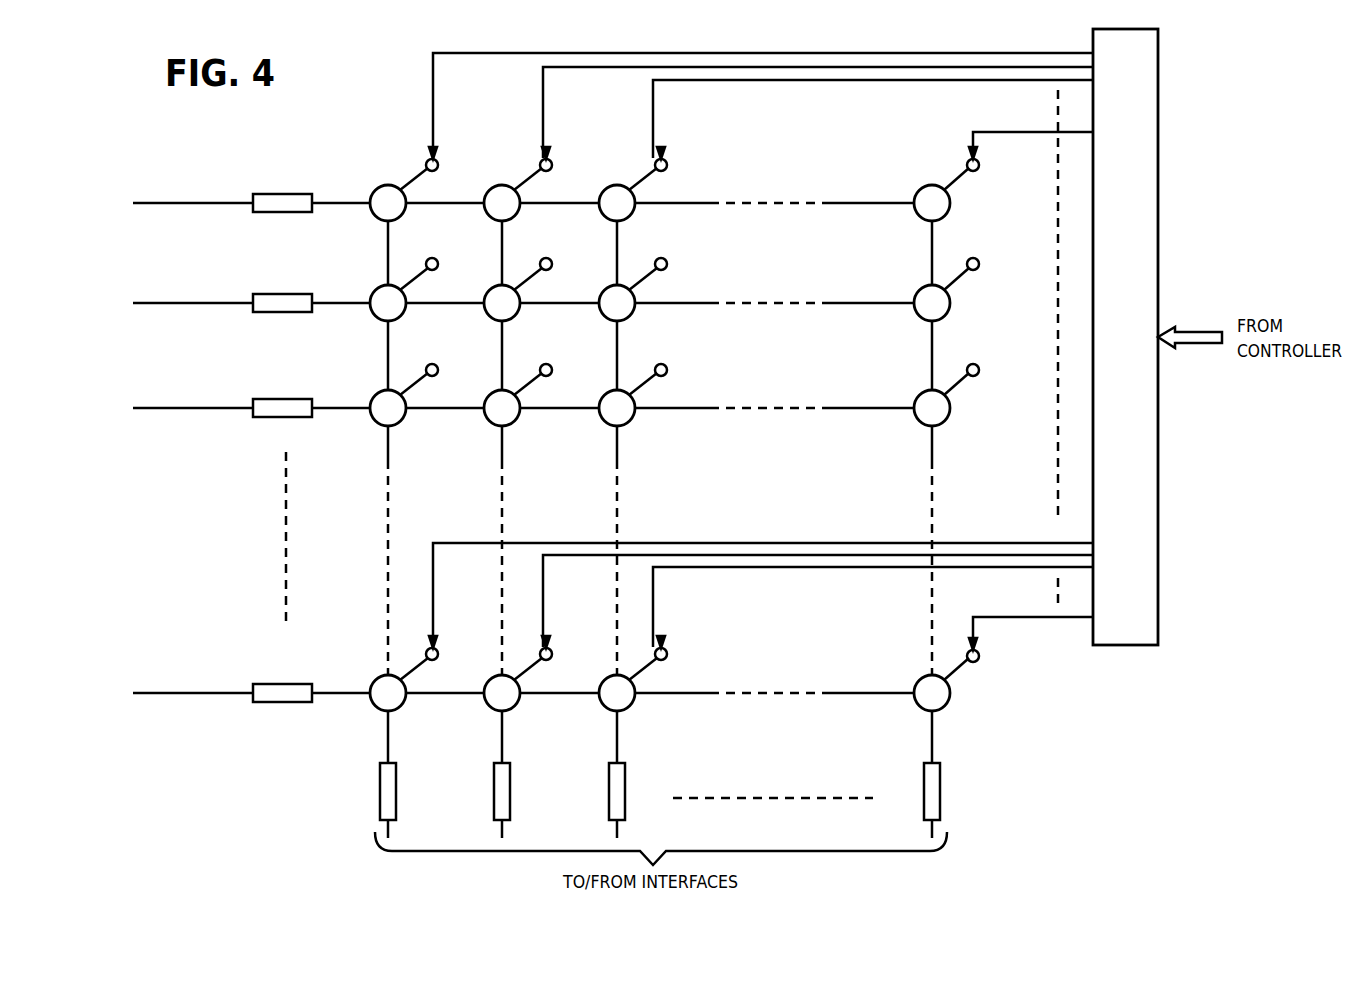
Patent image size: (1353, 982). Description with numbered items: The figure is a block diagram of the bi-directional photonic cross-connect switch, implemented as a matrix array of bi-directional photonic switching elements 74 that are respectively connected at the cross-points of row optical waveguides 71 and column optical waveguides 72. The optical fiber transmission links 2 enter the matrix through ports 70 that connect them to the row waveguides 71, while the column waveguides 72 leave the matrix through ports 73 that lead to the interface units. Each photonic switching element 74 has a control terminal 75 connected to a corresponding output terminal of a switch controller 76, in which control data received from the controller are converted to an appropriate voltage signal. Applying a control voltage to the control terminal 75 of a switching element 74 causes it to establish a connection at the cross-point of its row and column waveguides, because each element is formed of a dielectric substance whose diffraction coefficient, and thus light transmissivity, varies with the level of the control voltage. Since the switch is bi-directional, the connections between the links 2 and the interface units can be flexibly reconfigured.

The optical fiber transmission link 2 is at (168, 201).
The port 70 is at (284, 189).
The row optical waveguide 71 is at (337, 199).
The column optical waveguide 72 is at (390, 260).
The port 73 is at (396, 792).
The bi-directional photonic switching element 74 is at (397, 186).
The control terminal 75 is at (439, 163).
The switch controller 76 is at (1158, 228).